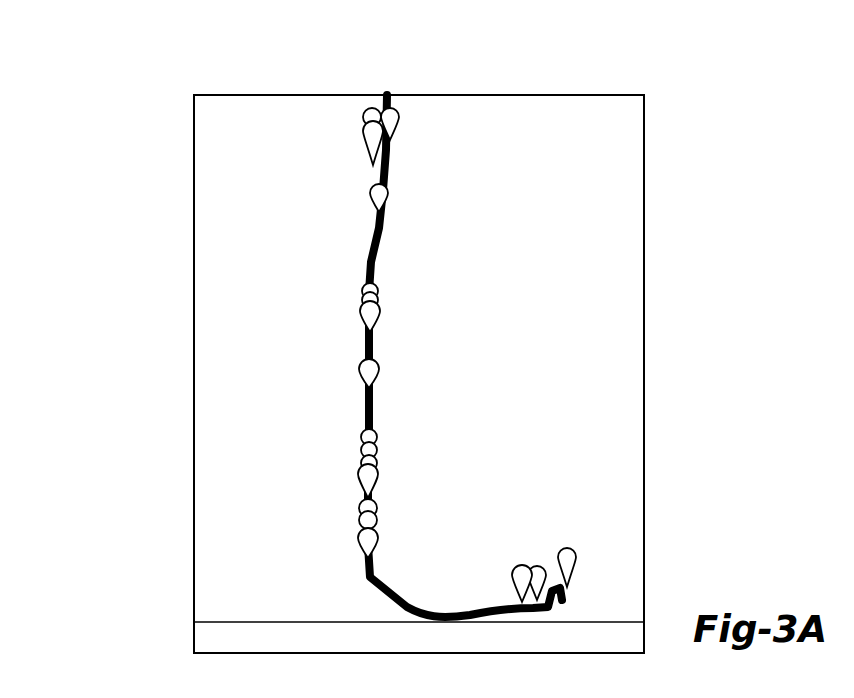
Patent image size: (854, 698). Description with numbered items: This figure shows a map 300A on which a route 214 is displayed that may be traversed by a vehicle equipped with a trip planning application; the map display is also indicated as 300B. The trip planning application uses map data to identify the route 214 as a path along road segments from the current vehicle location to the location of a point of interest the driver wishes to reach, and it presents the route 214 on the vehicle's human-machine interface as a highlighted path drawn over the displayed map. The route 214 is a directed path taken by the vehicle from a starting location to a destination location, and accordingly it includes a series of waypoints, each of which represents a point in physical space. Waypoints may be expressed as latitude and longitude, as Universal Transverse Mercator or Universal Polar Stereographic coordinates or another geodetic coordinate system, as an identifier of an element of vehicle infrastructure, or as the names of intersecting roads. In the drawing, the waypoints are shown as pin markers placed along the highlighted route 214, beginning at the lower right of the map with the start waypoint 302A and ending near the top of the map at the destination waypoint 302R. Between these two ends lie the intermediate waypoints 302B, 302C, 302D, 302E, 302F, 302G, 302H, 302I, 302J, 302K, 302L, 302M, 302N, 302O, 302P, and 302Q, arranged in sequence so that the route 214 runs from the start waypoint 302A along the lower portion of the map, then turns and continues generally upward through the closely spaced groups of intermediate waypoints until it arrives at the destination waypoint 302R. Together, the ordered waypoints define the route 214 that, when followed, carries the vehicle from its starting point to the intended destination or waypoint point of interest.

The map 300A is at (143, 55).
The map 300B is at (118, 689).
The route 214 is at (375, 250).
The start waypoint 302A is at (580, 564).
The intermediate waypoint 302B is at (562, 600).
The intermediate waypoint 302C is at (512, 581).
The intermediate waypoint 302D is at (358, 542).
The intermediate waypoint 302E is at (361, 522).
The intermediate waypoint 302F is at (360, 511).
The intermediate waypoint 302G is at (358, 486).
The intermediate waypoint 302H is at (362, 465).
The intermediate waypoint 302I is at (362, 452).
The intermediate waypoint 302J is at (362, 438).
The intermediate waypoint 302K is at (360, 373).
The intermediate waypoint 302L is at (361, 314).
The intermediate waypoint 302M is at (363, 301).
The intermediate waypoint 302N is at (362, 291).
The intermediate waypoint 302O is at (370, 194).
The intermediate waypoint 302P is at (395, 118).
The intermediate waypoint 302Q is at (366, 118).
The destination waypoint 302R is at (363, 135).